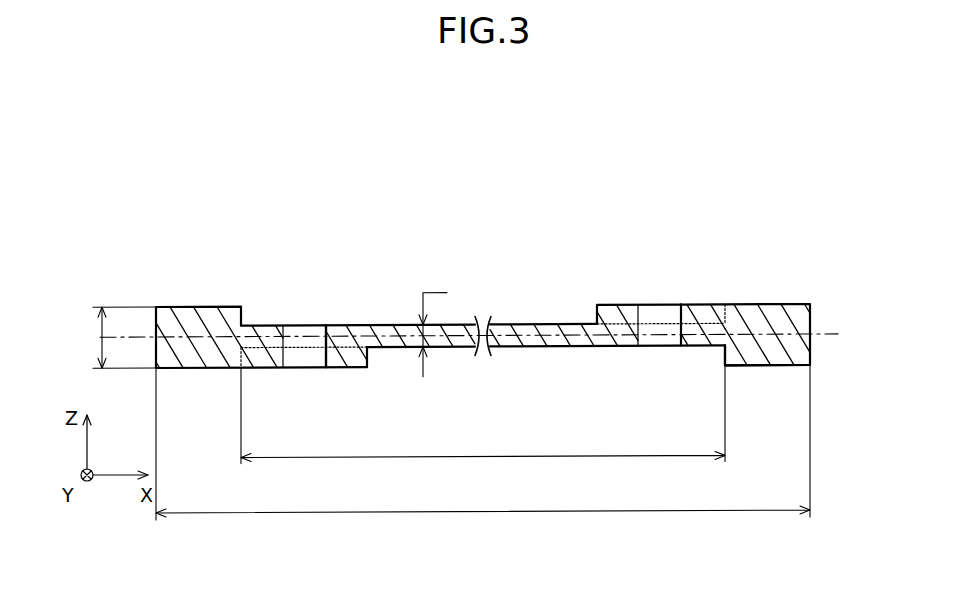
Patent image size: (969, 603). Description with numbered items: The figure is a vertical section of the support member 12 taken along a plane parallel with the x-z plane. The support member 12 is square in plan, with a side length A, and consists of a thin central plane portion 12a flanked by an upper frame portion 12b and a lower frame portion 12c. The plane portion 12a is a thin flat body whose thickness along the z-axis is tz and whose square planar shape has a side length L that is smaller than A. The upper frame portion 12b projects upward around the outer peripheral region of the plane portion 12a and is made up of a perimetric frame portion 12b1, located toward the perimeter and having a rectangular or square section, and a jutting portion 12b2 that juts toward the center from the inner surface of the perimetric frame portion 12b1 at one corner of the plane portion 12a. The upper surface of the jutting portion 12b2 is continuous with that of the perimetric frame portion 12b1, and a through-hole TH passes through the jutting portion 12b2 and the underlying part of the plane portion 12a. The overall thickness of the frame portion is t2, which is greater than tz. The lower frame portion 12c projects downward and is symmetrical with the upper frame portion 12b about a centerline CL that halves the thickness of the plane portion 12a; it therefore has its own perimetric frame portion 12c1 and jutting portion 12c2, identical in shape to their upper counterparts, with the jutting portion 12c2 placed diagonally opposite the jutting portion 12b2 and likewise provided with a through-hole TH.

The support member 12 is at (583, 202).
The plane portion 12a is at (516, 330).
The upper frame portion 12b is at (208, 265).
The perimetric frame portion 12b1 is at (187, 310).
The jutting portion 12b2 is at (627, 308).
The lower frame portion 12c is at (199, 399).
The perimetric frame portion 12c1 is at (741, 362).
The jutting portion 12c2 is at (342, 362).
The through-hole TH is at (325, 358).
The thickness of the plane portion tz is at (433, 323).
The thickness of the frame portion t2 is at (115, 337).
The length of one side of the plane portion L is at (483, 414).
The length of one side of the support member A is at (483, 442).
The centerline CL is at (483, 338).